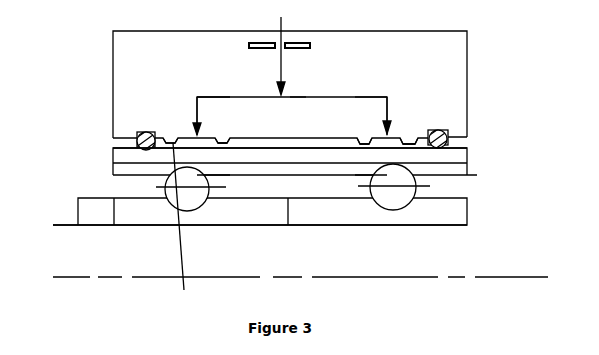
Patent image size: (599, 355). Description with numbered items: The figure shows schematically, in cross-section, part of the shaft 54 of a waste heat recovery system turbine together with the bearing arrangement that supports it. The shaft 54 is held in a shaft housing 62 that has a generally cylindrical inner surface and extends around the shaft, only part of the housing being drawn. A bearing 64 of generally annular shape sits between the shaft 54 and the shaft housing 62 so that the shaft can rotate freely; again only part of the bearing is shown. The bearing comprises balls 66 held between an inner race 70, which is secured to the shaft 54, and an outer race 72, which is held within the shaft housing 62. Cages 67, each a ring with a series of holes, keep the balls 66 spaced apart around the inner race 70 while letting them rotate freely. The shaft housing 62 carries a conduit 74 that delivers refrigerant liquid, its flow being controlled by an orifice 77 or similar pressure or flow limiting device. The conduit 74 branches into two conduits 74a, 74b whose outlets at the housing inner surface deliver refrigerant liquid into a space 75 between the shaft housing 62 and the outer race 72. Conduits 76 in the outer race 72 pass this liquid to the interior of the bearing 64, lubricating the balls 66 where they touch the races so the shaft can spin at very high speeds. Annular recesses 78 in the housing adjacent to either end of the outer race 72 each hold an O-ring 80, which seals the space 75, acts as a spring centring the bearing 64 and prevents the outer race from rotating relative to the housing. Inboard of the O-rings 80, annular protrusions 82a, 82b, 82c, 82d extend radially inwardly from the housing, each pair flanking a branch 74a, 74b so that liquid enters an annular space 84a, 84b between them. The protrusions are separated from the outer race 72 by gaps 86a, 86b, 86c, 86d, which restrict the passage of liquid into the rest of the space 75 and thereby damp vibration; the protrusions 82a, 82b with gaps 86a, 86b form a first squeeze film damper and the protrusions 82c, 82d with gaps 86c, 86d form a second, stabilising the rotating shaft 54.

The shaft 54 is at (527, 233).
The shaft housing 62 is at (440, 56).
The bearing 64 is at (82, 174).
The balls 66 is at (172, 182).
The cage 67 is at (220, 186).
The inner race 70 is at (130, 203).
The outer race 72 is at (138, 160).
The conduit 74 is at (278, 86).
The first branch conduit 74a is at (225, 95).
The second branch conduit 74b is at (303, 95).
The space 75 is at (297, 137).
The conduits in outer race 76 is at (212, 162).
The orifice 77 is at (278, 45).
The annular recess 78 is at (147, 132).
The O-ring 80 is at (137, 136).
The first annular protrusion 82a is at (172, 140).
The second annular protrusion 82b is at (226, 140).
The third annular protrusion 82c is at (358, 144).
The fourth annular protrusion 82d is at (410, 144).
The first annular space 84a is at (192, 137).
The second annular space 84b is at (383, 141).
The first gap 86a is at (183, 228).
The second gap 86b is at (224, 144).
The third gap 86c is at (358, 147).
The fourth gap 86d is at (408, 147).